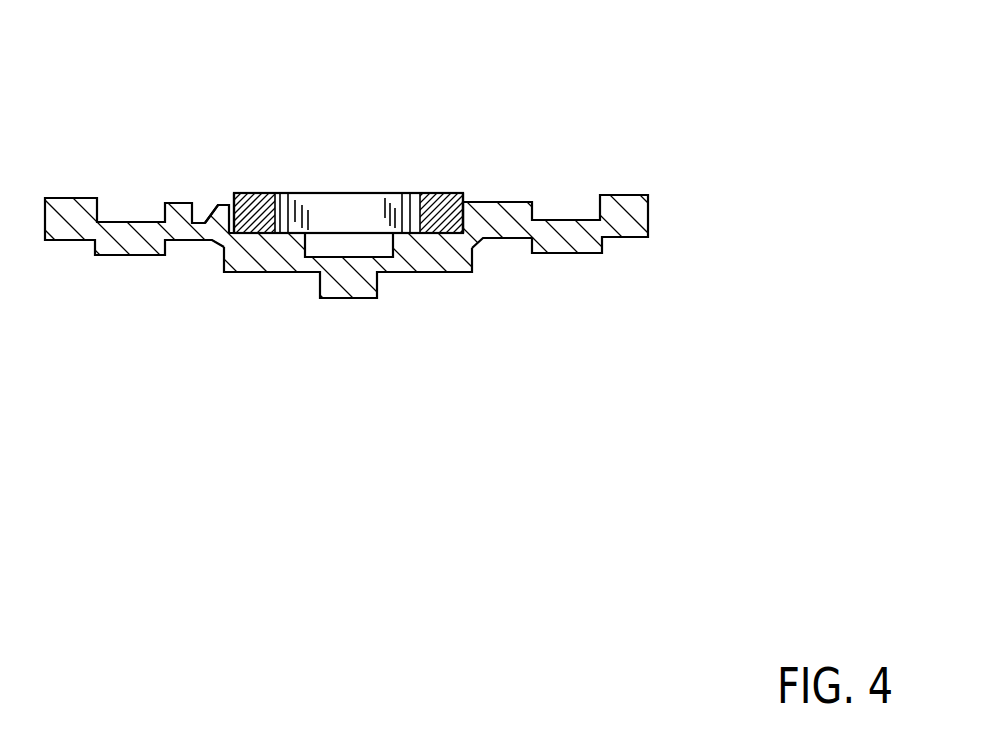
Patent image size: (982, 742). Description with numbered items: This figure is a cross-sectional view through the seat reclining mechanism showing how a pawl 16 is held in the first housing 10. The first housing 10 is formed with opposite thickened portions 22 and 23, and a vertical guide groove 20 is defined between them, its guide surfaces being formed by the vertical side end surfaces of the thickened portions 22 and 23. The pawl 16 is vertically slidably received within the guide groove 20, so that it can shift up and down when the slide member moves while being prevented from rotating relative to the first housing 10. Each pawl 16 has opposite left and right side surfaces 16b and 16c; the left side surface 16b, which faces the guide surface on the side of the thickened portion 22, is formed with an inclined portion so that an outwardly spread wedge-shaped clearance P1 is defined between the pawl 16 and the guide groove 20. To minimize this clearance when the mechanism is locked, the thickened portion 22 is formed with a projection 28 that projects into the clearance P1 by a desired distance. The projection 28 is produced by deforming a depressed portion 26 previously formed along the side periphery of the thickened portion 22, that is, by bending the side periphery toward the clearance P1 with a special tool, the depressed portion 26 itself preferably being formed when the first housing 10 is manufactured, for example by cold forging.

The first housing 10 is at (257, 257).
The pawl 16 is at (338, 193).
The left side surface 16b is at (233, 203).
The right side surface 16c is at (467, 198).
The guide groove 20 is at (372, 193).
The thickened portion 22 is at (173, 200).
The thickened portion 23 is at (502, 206).
The depressed portion 26 is at (202, 205).
The projection 28 is at (263, 193).
The clearance P1 is at (222, 243).